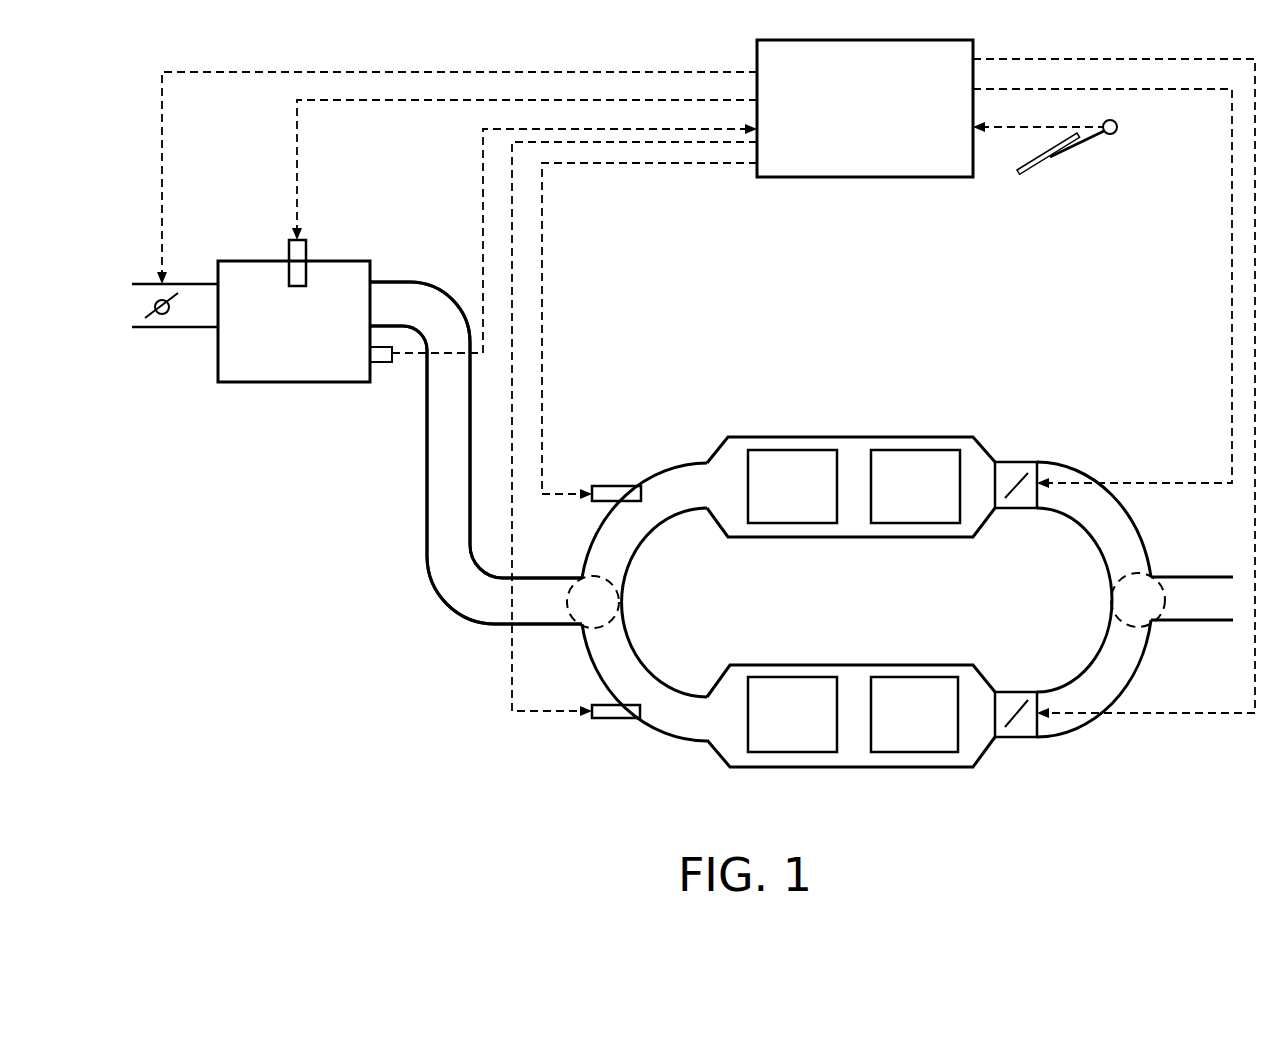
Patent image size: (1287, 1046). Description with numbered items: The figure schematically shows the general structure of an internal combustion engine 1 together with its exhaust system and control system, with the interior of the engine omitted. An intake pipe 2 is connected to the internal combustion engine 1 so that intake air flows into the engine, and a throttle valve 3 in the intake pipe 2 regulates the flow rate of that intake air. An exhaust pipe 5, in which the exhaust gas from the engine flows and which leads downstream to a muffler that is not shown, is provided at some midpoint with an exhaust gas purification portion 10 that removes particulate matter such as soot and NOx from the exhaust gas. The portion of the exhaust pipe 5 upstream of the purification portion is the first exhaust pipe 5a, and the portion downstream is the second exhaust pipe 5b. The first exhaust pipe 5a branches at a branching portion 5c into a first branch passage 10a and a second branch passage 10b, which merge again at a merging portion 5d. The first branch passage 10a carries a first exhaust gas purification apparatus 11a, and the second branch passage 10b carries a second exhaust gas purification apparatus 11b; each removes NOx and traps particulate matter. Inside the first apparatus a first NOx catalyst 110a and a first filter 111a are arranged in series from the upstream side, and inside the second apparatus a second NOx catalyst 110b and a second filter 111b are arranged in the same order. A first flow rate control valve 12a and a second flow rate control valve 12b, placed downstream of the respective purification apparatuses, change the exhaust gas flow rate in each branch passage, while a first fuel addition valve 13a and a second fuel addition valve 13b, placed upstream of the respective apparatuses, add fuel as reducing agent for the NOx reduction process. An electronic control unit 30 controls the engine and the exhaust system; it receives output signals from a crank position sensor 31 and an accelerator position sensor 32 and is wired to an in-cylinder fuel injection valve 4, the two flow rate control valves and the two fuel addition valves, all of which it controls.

The internal combustion engine 1 is at (245, 385).
The intake pipe 2 is at (200, 282).
The throttle valve 3 is at (166, 322).
The in-cylinder fuel injection valve 4 is at (306, 257).
The crank position sensor 31 is at (390, 365).
The electronic control unit (ECU) 30 is at (940, 178).
The accelerator position sensor 32 is at (1115, 135).
The exhaust pipe 5 is at (427, 606).
The first exhaust pipe 5a is at (474, 624).
The second exhaust pipe 5b is at (1188, 622).
The branching portion 5c is at (606, 628).
The merging portion 5d is at (1140, 572).
The exhaust gas purification portion 10 is at (695, 369).
The first branch passage 10a is at (1073, 465).
The second branch passage 10b is at (1090, 662).
The first exhaust gas purification apparatus 11a is at (850, 423).
The second exhaust gas purification apparatus 11b is at (843, 637).
The first NOx catalyst 110a is at (748, 518).
The first filter 111a is at (917, 450).
The second NOx catalyst 110b is at (767, 677).
The second filter 111b is at (930, 676).
The first flow rate control valve 12a is at (1017, 462).
The second flow rate control valve 12b is at (1012, 740).
The first fuel addition valve 13a is at (598, 486).
The second fuel addition valve 13b is at (637, 718).